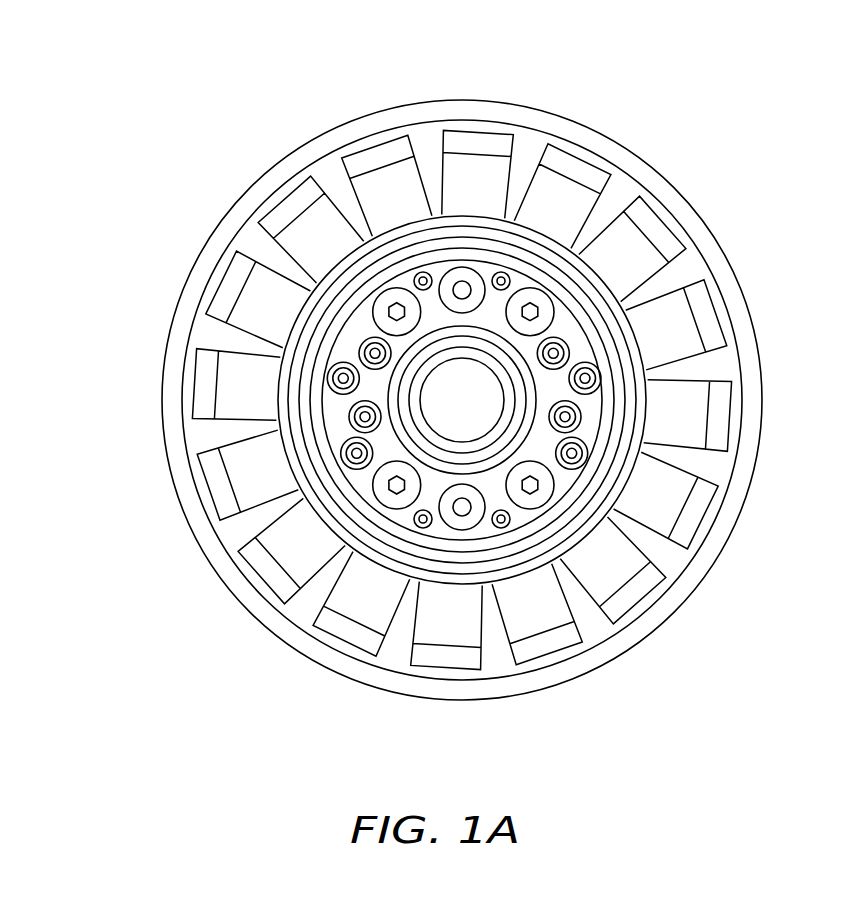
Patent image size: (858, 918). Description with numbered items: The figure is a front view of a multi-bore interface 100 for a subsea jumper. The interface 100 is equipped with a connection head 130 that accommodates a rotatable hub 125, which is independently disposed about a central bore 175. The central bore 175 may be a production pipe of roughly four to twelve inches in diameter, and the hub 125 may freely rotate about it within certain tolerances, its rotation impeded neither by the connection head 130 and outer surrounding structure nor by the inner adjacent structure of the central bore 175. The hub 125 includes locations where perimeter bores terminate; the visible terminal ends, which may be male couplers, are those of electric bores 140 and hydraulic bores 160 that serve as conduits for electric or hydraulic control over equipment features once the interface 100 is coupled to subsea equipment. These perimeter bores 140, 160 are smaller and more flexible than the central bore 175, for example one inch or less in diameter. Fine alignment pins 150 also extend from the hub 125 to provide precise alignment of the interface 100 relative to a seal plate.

The multi-bore interface 100 is at (218, 73).
The rotatable hub 125 is at (593, 418).
The connection head 130 is at (632, 165).
The electric bores 140 is at (340, 450).
The alignment pins 150 is at (456, 276).
The hydraulic bores 160 is at (373, 310).
The central bore 175 is at (508, 382).